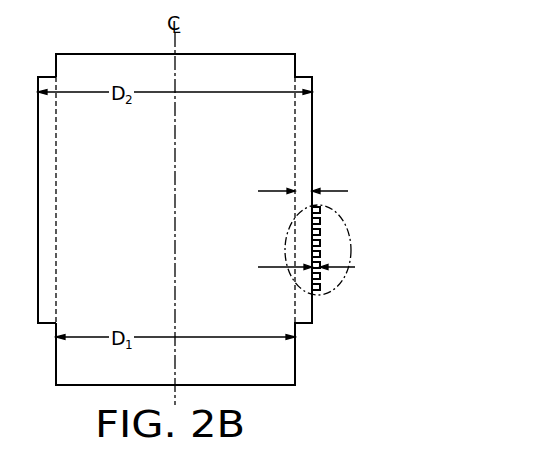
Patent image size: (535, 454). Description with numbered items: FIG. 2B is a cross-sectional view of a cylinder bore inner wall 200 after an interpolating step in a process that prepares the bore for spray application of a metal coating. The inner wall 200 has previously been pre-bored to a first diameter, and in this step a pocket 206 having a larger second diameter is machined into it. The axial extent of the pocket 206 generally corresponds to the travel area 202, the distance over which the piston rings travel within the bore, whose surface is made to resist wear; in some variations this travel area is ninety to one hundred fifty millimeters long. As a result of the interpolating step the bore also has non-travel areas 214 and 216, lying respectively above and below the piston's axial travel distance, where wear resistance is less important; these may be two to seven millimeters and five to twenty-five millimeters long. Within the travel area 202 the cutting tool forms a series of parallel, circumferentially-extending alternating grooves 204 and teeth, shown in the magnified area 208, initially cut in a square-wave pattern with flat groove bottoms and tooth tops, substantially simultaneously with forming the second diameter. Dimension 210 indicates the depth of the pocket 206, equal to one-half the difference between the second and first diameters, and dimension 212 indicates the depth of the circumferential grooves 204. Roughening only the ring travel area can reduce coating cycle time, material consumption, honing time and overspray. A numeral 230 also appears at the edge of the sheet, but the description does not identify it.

The cylinder bore inner wall 200 is at (55, 162).
The travel area 202 is at (313, 137).
The grooves 204 is at (315, 290).
The pocket 206 is at (48, 255).
The magnified area 208 is at (352, 252).
The pocket depth dimension 210 is at (272, 190).
The groove depth dimension 212 is at (272, 268).
The non-travel area 214 is at (297, 68).
The non-travel area 216 is at (297, 363).
The component of adjacent figure 230 is at (384, 453).